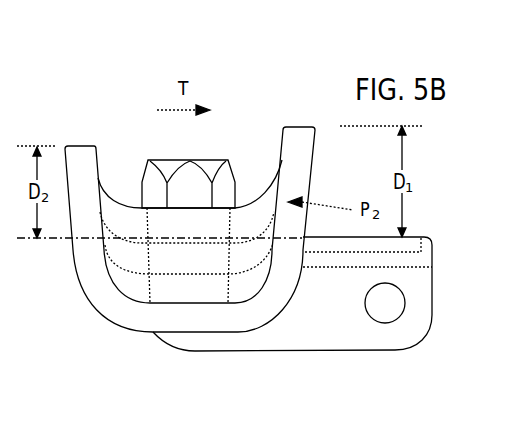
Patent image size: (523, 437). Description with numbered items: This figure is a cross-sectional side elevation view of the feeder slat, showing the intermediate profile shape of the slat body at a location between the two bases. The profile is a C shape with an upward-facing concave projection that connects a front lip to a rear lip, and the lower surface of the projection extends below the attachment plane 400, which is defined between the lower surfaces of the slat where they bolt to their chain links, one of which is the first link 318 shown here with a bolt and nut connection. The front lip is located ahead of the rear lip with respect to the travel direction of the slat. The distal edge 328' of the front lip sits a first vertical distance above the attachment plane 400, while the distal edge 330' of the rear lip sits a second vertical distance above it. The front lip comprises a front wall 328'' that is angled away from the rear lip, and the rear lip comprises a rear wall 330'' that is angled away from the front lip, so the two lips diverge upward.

The first link 318 is at (300, 328).
The attachment plane 400 is at (82, 240).
The distal edge of the rear lip 330' is at (74, 157).
The rear wall 330'' is at (119, 157).
The distal edge of the front lip 328' is at (293, 155).
The front wall 328'' is at (257, 158).